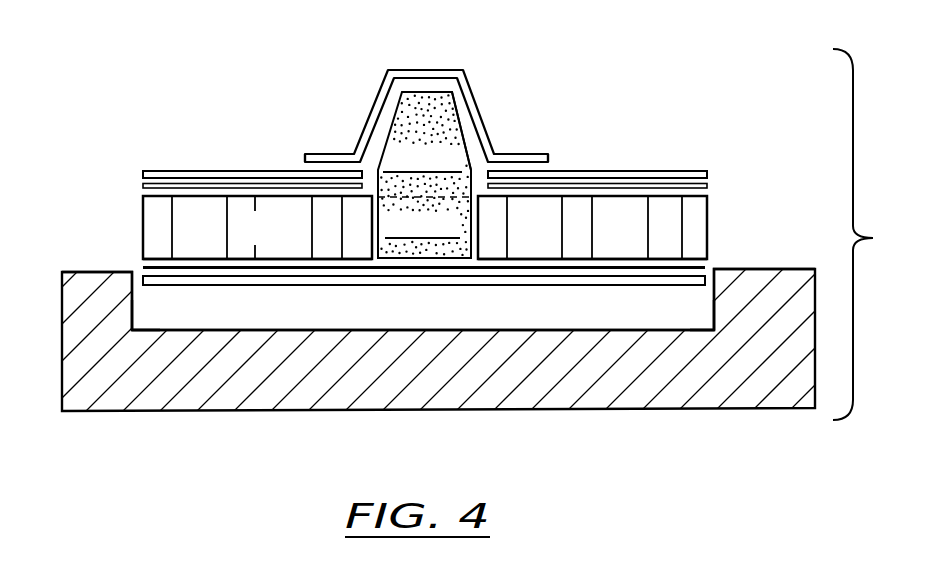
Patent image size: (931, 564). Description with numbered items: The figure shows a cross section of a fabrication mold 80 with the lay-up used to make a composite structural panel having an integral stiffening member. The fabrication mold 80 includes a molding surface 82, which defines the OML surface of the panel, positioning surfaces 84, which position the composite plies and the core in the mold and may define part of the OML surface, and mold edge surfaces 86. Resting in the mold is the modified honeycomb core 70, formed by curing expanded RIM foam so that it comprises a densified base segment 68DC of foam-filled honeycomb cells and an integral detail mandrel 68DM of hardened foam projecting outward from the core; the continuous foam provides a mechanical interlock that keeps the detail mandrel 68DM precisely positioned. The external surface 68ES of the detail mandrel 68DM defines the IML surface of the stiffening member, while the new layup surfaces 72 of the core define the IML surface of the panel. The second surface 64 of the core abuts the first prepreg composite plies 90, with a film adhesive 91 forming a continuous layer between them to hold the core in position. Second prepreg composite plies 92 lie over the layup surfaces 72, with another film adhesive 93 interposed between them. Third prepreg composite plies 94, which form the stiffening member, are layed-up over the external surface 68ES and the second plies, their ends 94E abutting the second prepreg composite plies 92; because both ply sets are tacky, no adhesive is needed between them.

The second surface 64 is at (207, 263).
The detail mandrel 68DM is at (424, 175).
The densified base segment 68DC is at (424, 227).
The external surface 68ES is at (450, 103).
The modified honeycomb core 70 is at (442, 162).
The layup surfaces 72 is at (157, 196).
The fabrication mold 80 is at (120, 422).
The molding surface 82 is at (273, 330).
The positioning surfaces 84 is at (132, 316).
The mold edge surfaces 86 is at (85, 272).
The first prepreg composite plies 90 is at (528, 286).
The film adhesive 91 is at (388, 269).
The second prepreg composite plies 92 is at (265, 171).
The film adhesive 93 is at (197, 184).
The third prepreg composite plies 94 is at (423, 69).
The ends of third prepreg composite plies 94E is at (335, 153).